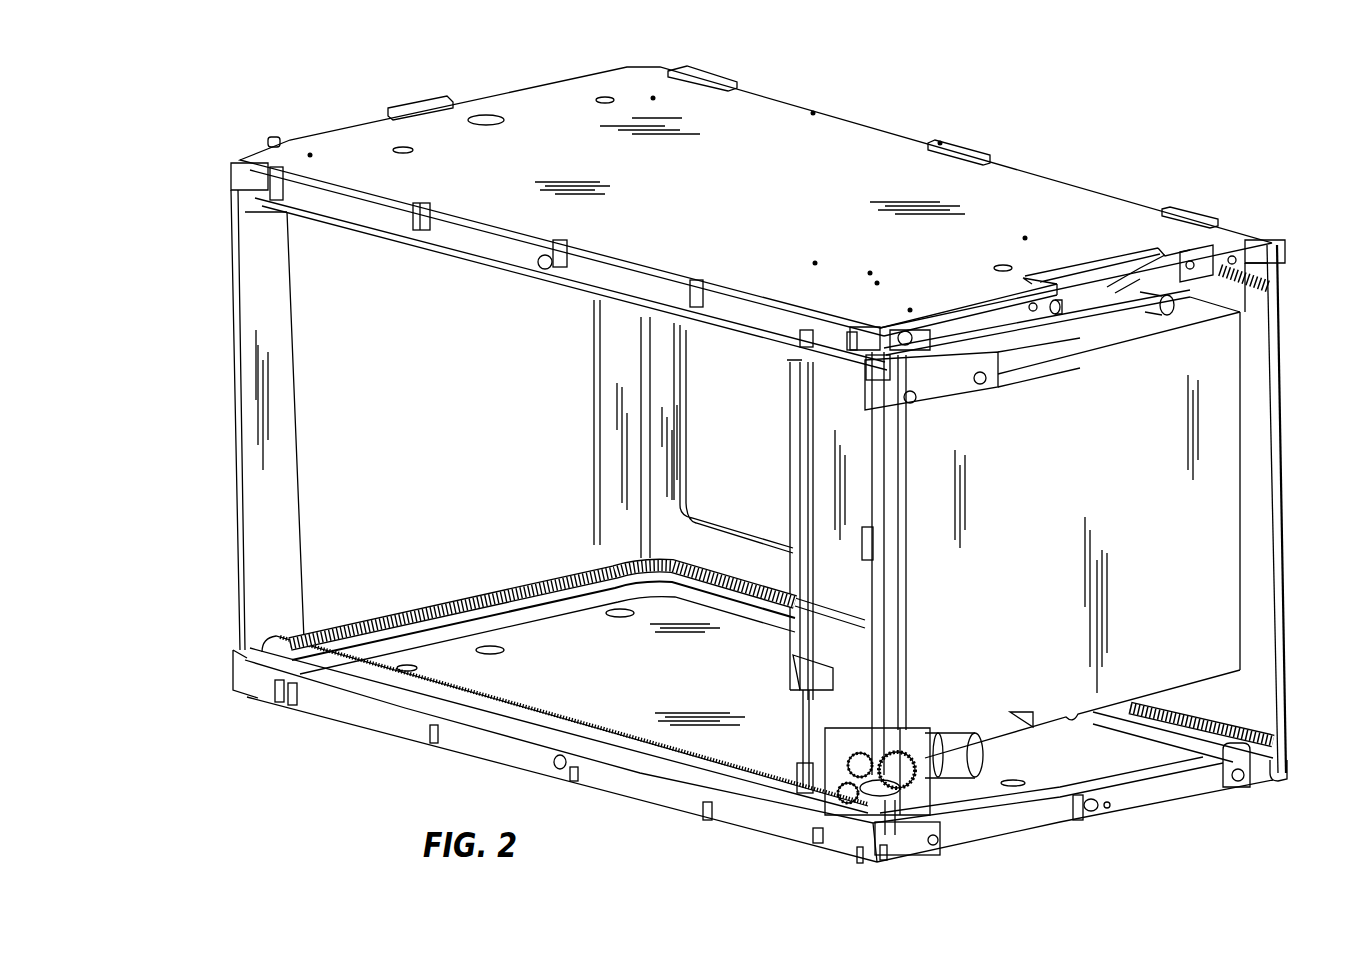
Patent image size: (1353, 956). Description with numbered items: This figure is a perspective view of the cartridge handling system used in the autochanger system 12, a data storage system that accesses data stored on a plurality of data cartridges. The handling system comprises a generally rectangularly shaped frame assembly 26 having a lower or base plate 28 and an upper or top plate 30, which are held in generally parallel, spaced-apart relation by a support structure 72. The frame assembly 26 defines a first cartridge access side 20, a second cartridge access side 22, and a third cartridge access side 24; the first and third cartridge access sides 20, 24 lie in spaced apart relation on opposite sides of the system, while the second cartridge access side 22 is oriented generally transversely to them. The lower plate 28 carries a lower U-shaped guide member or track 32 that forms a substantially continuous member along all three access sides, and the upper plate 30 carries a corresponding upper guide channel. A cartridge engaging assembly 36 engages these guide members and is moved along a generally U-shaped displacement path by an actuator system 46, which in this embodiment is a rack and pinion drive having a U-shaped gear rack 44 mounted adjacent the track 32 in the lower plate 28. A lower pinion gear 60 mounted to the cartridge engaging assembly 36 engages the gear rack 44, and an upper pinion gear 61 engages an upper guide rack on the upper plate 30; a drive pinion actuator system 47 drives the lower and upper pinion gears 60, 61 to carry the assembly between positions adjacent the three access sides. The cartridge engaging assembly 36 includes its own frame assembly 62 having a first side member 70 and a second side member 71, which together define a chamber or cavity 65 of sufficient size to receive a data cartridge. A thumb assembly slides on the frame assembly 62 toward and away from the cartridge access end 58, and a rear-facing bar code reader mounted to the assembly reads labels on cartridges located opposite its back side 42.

The autochanger system 12 is at (262, 100).
The first cartridge access side 20 is at (353, 706).
The second cartridge access side 22 is at (598, 403).
The third cartridge access side 24 is at (1283, 598).
The frame assembly 26 is at (222, 240).
The lower plate 28 is at (700, 690).
The upper plate 30 is at (741, 198).
The lower U-shaped guide member or track 32 is at (552, 624).
The cartridge engaging assembly 36 is at (766, 465).
The back side 42 is at (1238, 432).
The U-shaped gear rack 44 is at (517, 577).
The actuator system 46 is at (982, 845).
The drive pinion actuator system 47 is at (988, 748).
The cartridge access end 58 is at (786, 400).
The lower pinion gear 60 is at (900, 822).
The upper pinion gear 61 is at (893, 365).
The frame assembly 62 is at (1140, 536).
The chamber or cavity 65 is at (822, 550).
The first side member 70 is at (793, 487).
The second side member 71 is at (1071, 477).
The support structure 72 is at (237, 423).